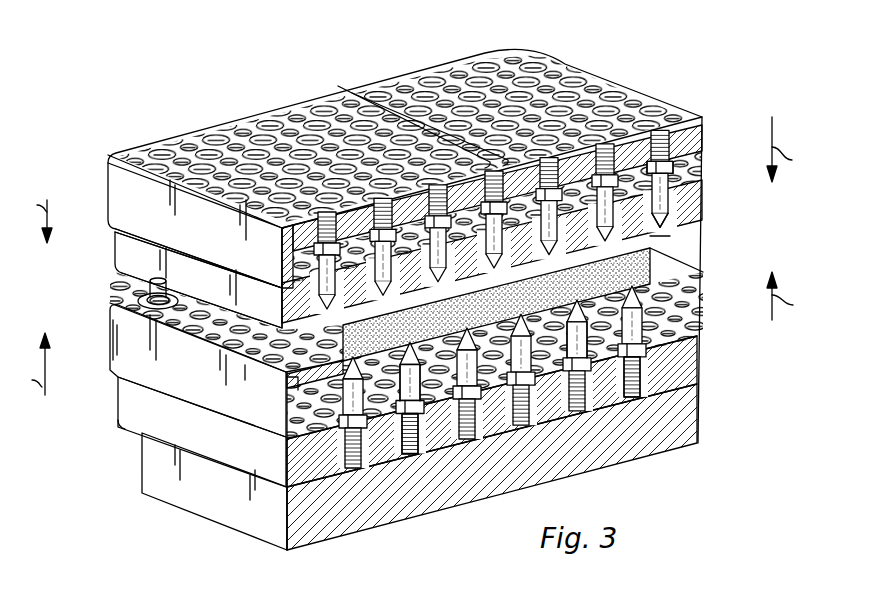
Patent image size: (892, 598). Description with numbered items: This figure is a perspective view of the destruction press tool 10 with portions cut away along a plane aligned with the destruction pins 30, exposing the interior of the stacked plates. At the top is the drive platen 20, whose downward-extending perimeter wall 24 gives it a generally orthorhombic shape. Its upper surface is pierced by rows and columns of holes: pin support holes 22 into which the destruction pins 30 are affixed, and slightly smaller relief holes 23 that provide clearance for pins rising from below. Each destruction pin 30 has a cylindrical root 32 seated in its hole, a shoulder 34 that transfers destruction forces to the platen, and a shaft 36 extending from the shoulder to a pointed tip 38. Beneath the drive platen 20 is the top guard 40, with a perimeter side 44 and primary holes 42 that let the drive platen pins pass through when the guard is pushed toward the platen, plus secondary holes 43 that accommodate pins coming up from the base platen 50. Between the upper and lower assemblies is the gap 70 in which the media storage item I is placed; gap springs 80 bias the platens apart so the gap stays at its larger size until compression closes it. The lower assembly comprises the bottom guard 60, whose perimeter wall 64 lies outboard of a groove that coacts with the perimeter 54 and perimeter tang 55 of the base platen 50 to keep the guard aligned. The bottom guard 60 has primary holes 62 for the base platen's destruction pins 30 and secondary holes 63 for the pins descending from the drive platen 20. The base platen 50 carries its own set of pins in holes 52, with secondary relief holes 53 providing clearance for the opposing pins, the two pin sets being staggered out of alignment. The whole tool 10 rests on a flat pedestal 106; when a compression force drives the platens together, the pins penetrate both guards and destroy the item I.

The destruction press tool 10 is at (680, 59).
The drive platen 20 is at (175, 143).
The pin support holes 22 is at (352, 93).
The relief holes 23 is at (338, 86).
The perimeter wall 24 is at (234, 239).
The destruction pins 30 is at (667, 180).
The root 32 is at (660, 127).
The shoulder 34 is at (675, 162).
The shaft 36 is at (685, 200).
The tip 38 is at (665, 240).
The top guard 40 is at (127, 247).
The primary holes 42 is at (287, 312).
The secondary holes 43 is at (343, 330).
The perimeter side 44 is at (219, 290).
The base platen 50 is at (140, 415).
The holes 52 is at (433, 440).
The secondary relief holes 53 is at (390, 437).
The perimeter 54 is at (215, 443).
The perimeter tang 55 is at (317, 385).
The bottom guard 60 is at (118, 330).
The primary holes 62 is at (288, 367).
The secondary holes 63 is at (288, 388).
The perimeter wall 64 is at (220, 383).
The gap 70 is at (123, 278).
The gap springs 80 is at (137, 297).
The flat pedestal 106 is at (213, 503).
The media storage item I is at (652, 248).